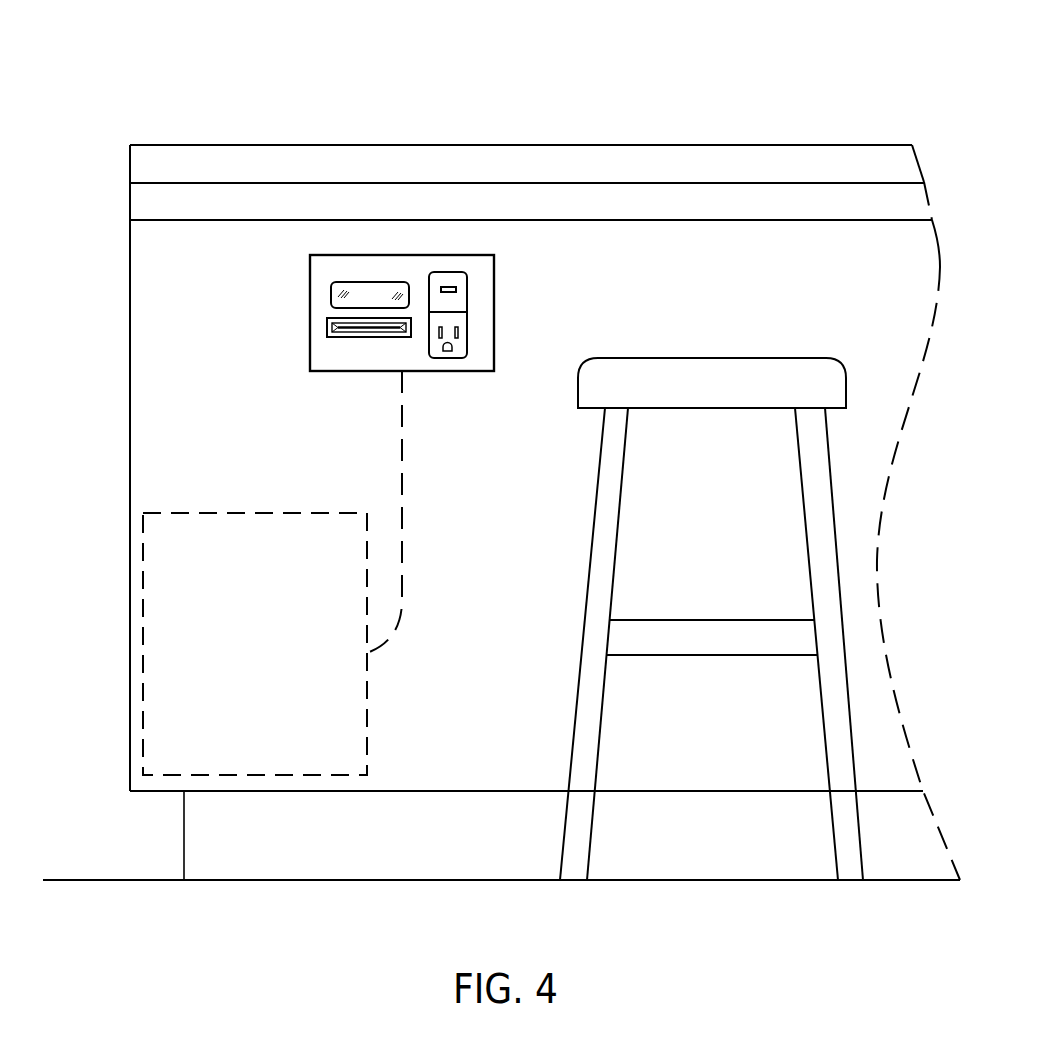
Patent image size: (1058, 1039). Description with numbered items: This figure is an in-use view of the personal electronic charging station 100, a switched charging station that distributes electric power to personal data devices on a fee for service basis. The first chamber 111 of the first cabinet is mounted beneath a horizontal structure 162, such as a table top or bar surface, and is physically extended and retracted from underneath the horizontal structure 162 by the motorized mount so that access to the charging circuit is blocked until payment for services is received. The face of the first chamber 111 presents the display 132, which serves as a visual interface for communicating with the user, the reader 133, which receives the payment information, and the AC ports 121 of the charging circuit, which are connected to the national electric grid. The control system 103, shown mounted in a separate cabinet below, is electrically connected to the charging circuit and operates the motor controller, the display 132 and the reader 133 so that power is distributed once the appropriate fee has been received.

The personal electronic charging station 100 is at (92, 138).
The horizontal structure 162 is at (300, 163).
The first chamber 111 is at (494, 278).
The display 132 is at (331, 296).
The reader 133 is at (327, 325).
The AC ports 121 is at (467, 356).
The control system 103 is at (187, 513).